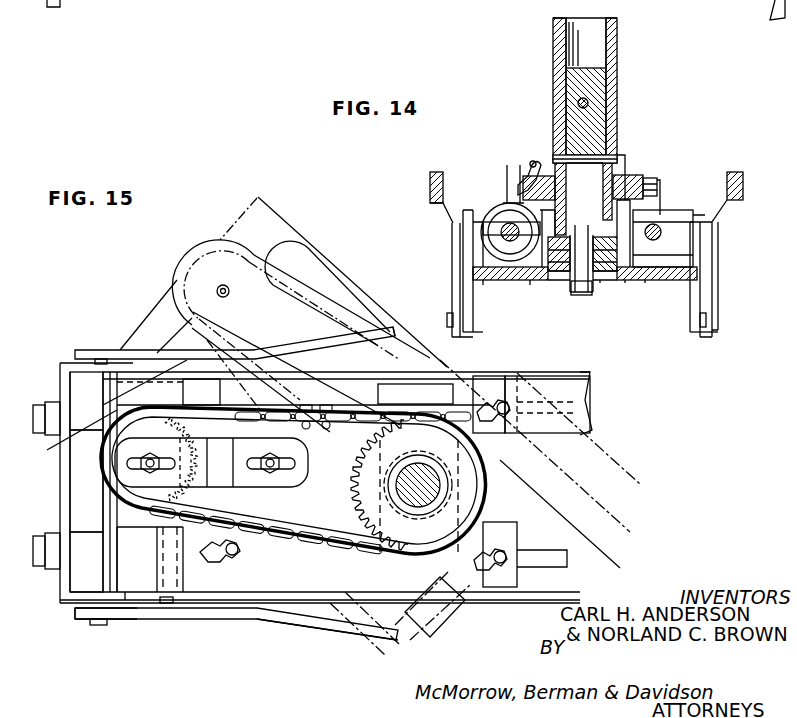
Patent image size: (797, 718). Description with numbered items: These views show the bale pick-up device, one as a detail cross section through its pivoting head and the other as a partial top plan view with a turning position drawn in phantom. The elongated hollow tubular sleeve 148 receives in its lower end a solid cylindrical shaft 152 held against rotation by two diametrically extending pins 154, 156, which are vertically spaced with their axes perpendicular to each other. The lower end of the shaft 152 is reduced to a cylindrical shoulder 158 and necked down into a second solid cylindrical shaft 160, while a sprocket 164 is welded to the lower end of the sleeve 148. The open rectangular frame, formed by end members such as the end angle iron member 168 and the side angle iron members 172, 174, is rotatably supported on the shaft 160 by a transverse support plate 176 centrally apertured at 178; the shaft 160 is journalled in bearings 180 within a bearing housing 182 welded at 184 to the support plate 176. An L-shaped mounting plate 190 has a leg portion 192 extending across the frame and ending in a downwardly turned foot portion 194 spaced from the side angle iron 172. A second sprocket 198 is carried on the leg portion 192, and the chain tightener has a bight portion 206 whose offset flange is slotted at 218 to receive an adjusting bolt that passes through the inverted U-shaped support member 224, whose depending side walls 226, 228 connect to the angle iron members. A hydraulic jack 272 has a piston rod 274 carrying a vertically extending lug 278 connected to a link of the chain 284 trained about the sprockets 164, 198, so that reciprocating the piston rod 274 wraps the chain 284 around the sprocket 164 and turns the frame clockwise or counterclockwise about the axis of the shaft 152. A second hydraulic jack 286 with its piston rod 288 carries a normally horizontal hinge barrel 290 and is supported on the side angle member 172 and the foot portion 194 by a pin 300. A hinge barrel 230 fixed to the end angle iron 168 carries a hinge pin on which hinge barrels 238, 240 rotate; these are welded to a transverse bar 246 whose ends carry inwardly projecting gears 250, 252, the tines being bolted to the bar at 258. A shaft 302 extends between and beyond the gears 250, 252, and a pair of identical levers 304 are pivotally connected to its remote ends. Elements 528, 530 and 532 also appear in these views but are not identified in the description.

In FIG. 14, the tubular sleeve 148 is at (613, 86).
In FIG. 14, the solid cylindrical shaft 152 is at (598, 126).
In FIG. 14, the pin 154 is at (589, 104).
In FIG. 14, the pin 156 is at (572, 156).
In FIG. 14, the bight portion 206 is at (620, 158).
In FIG. 14, the sprocket 164 is at (625, 182).
In FIG. 15, the sprocket 164 is at (355, 495).
In FIG. 14, the support member 224 is at (652, 182).
In FIG. 14, the side wall 226 is at (668, 200).
In FIG. 14, the leg portion 192 is at (668, 220).
In FIG. 15, the leg portion 192 is at (80, 470).
In FIG. 14, the lug 278 is at (720, 222).
In FIG. 14, the piston rod 274 is at (695, 240).
In FIG. 15, the piston rod 274 is at (378, 378).
In FIG. 14, the bearings 180 is at (617, 250).
In FIG. 14, the bearing housing 182 is at (617, 263).
In FIG. 14, the side angle iron member 174 is at (698, 288).
In FIG. 15, the side angle iron member 174 is at (368, 272).
In FIG. 14, the slot 218 is at (525, 192).
In FIG. 14, the piston rod 288 is at (500, 212).
In FIG. 15, the piston rod 288 is at (530, 555).
In FIG. 14, the second hydraulic jack 286 is at (480, 257).
In FIG. 15, the second hydraulic jack 286 is at (343, 605).
In FIG. 14, the side angle iron member 172 is at (485, 282).
In FIG. 15, the side angle iron member 172 is at (415, 642).
In FIG. 14, the side wall 228 is at (532, 282).
In FIG. 14, the shoulder 158 is at (550, 281).
In FIG. 14, the second solid cylindrical shaft 160 is at (580, 296).
In FIG. 14, the aperture 178 is at (598, 283).
In FIG. 14, the support plate 176 is at (645, 282).
In FIG. 14, the weld 184 is at (625, 283).
In FIG. 14, the gear 252 is at (478, 332).
In FIG. 15, the gear 252 is at (87, 620).
In FIG. 14, the gear 250 is at (705, 337).
In FIG. 14, the bolt 258 is at (757, 16).
In FIG. 15, the bar 246 is at (79, 6).
In FIG. 15, the L-shaped mounting plate 190 is at (70, 375).
In FIG. 15, the hinge barrel 240 is at (75, 400).
In FIG. 15, the hinge barrel 230 is at (75, 480).
In FIG. 15, the hinge barrel 238 is at (77, 577).
In FIG. 15, the shaft 302 is at (103, 626).
In FIG. 15, the end angle iron member 168 is at (125, 594).
In FIG. 15, the hinge barrel 290 is at (165, 594).
In FIG. 15, the pin 300 is at (170, 604).
In FIG. 15, the lever 304 is at (352, 326).
In FIG. 15, the rail 532 is at (473, 380).
In FIG. 15, the hydraulic jack 272 is at (528, 378).
In FIG. 15, the bolt 530 is at (490, 525).
In FIG. 15, the sprocket 198 is at (263, 255).
In FIG. 15, the chain 284 is at (305, 282).
In FIG. 15, the foot portion 194 is at (128, 528).
In FIG. 15, the bolt 528 is at (236, 556).